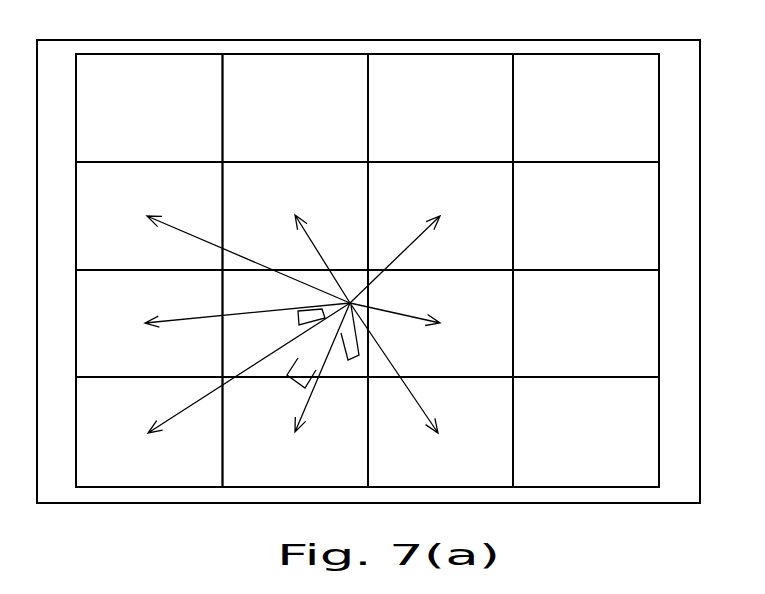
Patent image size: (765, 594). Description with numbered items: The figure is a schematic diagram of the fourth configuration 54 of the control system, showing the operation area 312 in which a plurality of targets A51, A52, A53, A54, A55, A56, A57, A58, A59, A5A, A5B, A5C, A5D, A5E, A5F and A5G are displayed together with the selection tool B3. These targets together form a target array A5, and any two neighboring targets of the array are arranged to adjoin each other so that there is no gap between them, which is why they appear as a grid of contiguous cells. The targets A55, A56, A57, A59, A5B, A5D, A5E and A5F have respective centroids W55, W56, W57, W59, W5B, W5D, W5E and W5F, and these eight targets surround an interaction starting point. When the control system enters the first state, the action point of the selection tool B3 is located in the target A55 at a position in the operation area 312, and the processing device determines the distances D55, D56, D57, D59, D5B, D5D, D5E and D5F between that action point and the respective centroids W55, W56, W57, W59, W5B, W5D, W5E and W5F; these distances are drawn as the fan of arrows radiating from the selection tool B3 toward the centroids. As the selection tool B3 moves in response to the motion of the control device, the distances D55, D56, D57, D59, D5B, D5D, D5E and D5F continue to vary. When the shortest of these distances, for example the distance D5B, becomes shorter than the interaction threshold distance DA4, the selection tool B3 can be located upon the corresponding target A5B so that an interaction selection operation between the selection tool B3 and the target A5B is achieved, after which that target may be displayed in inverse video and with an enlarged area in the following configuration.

The target A51 is at (128, 91).
The target A52 is at (276, 91).
The target A53 is at (421, 91).
The target A54 is at (566, 91).
The target A55 is at (128, 200).
The target A56 is at (276, 200).
The target A57 is at (421, 200).
The target A58 is at (566, 200).
The target A59 is at (128, 305).
The target A5A is at (276, 305).
The target A5B is at (505, 366).
The target A5C is at (651, 370).
The target A5D is at (128, 476).
The target A5E is at (361, 476).
The target A5F is at (505, 476).
The target A5G is at (651, 478).
The distance D55 is at (248, 251).
The distance D56 is at (328, 259).
The distance D57 is at (406, 259).
The distance D59 is at (247, 331).
The distance D5B is at (395, 301).
The distance D5D is at (249, 375).
The distance D5E is at (327, 367).
The distance D5F is at (394, 368).
The centroid W55 is at (127, 233).
The centroid W56 is at (325, 200).
The centroid W57 is at (474, 213).
The centroid W59 is at (127, 343).
The centroid W5B is at (474, 320).
The centroid W5D is at (122, 420).
The centroid W5E is at (277, 453).
The centroid W5F is at (430, 453).
The selection tool B3 is at (298, 385).
The interaction threshold distance DA4 is at (368, 252).
The operation area 312 is at (268, 40).
The fourth configuration 54 is at (441, 31).
The target array A5 is at (474, 53).